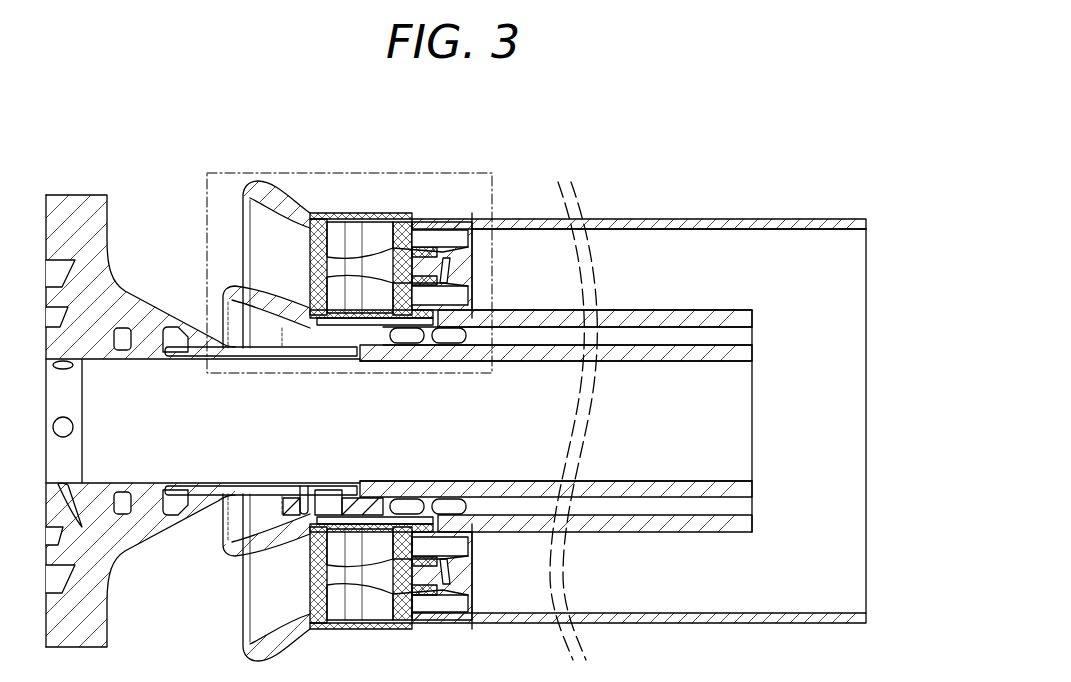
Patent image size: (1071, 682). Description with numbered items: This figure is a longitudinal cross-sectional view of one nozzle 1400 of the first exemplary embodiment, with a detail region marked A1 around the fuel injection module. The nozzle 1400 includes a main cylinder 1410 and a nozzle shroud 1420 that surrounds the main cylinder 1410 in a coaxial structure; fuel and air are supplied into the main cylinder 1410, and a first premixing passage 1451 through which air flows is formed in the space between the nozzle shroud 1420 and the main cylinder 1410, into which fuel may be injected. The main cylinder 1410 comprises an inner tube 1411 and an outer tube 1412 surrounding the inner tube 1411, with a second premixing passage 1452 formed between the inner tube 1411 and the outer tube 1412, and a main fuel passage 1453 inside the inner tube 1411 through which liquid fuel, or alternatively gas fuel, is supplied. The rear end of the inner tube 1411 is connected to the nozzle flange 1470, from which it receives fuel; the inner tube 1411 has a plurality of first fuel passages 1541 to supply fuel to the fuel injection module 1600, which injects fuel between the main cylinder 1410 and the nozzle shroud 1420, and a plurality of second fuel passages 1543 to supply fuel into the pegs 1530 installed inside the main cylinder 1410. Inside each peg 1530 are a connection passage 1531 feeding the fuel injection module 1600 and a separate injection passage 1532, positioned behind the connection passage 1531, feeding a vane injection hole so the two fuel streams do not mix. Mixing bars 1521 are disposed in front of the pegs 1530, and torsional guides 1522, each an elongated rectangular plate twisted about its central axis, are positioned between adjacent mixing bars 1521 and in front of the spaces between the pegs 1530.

The nozzle 1400 is at (737, 87).
The main cylinder 1410 is at (645, 350).
The inner tube 1411 is at (752, 352).
The outer tube 1412 is at (752, 320).
The nozzle shroud 1420 is at (833, 218).
The first premixing passage 1451 is at (536, 268).
The second premixing passage 1452 is at (681, 334).
The main fuel passage 1453 is at (693, 421).
The nozzle flange 1470 is at (72, 196).
The mixing bars 1521 is at (462, 488).
The torsional guides 1522 is at (466, 346).
The pegs 1530 is at (337, 342).
The connection passage 1531 is at (333, 489).
The injection passage 1532 is at (303, 486).
The first fuel passages 1541 is at (238, 360).
The second fuel passages 1543 is at (148, 486).
The fuel injection module 1600 is at (352, 213).
The detail area A1 is at (226, 172).